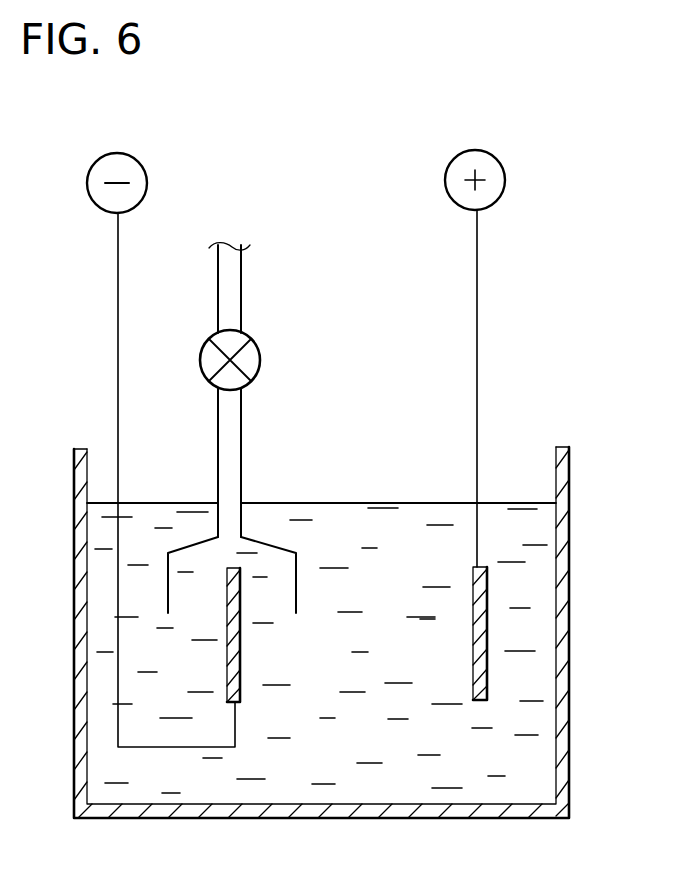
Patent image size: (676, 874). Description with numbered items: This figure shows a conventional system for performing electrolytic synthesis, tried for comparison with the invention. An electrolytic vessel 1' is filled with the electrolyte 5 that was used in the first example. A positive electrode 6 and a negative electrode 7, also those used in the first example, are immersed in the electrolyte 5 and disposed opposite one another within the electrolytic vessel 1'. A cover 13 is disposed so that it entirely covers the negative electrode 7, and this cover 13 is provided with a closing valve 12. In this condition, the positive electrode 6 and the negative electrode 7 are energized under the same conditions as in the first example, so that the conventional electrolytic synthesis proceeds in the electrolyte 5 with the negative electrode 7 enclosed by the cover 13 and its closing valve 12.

The electrolytic vessel 1' is at (362, 631).
The electrolyte 5 is at (540, 577).
The positive electrode 6 is at (472, 651).
The negative electrode 7 is at (241, 648).
The closing valve 12 is at (261, 357).
The cover 13 is at (243, 452).